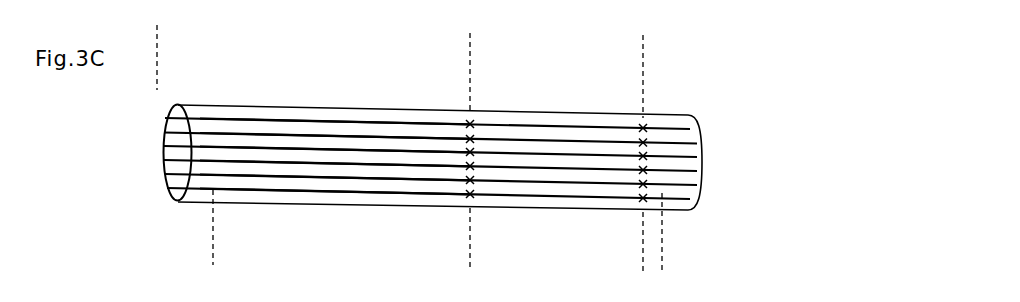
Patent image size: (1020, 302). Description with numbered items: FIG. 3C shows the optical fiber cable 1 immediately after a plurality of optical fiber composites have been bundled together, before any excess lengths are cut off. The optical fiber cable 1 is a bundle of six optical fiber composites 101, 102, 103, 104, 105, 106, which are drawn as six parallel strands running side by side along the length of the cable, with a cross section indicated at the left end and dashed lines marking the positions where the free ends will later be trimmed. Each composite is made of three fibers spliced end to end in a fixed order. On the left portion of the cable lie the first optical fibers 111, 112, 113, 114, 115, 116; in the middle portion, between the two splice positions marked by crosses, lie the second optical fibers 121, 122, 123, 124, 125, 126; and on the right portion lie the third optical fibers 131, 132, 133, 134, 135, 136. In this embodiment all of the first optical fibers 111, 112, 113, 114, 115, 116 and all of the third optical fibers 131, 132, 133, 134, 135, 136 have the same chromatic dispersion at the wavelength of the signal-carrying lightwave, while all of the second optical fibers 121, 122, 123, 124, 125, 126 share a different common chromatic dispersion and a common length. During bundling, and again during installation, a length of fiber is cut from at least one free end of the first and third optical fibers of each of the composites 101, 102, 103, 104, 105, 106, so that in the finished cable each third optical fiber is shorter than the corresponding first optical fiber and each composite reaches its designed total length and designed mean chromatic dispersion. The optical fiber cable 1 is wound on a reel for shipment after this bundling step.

The optical fiber cable 1 is at (435, 206).
The optical fiber composite 101 is at (175, 119).
The optical fiber composite 102 is at (166, 133).
The optical fiber composite 103 is at (167, 146).
The optical fiber composite 104 is at (168, 160).
The optical fiber composite 105 is at (169, 174).
The optical fiber composite 106 is at (171, 188).
The first optical fiber 111 is at (262, 120).
The first optical fiber 112 is at (305, 134).
The first optical fiber 113 is at (360, 148).
The first optical fiber 114 is at (288, 163).
The first optical fiber 115 is at (340, 177).
The first optical fiber 116 is at (388, 192).
The second optical fiber 121 is at (507, 125).
The second optical fiber 122 is at (550, 140).
The second optical fiber 123 is at (595, 154).
The second optical fiber 124 is at (508, 166).
The second optical fiber 125 is at (556, 181).
The second optical fiber 126 is at (600, 196).
The third optical fiber 131 is at (697, 118).
The third optical fiber 132 is at (695, 143).
The third optical fiber 133 is at (698, 156).
The third optical fiber 134 is at (698, 170).
The third optical fiber 135 is at (695, 184).
The third optical fiber 136 is at (690, 211).